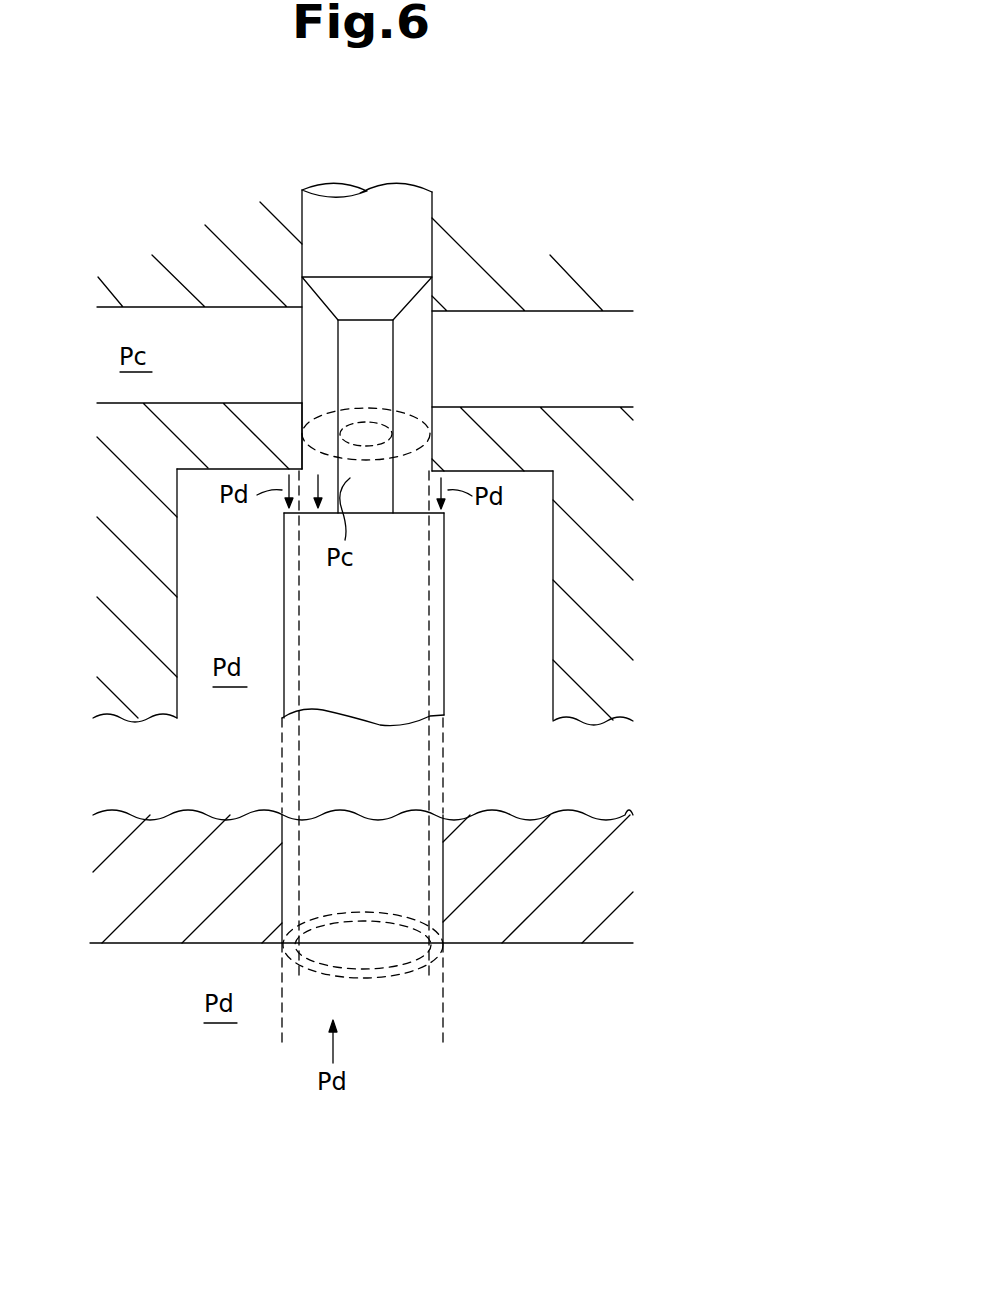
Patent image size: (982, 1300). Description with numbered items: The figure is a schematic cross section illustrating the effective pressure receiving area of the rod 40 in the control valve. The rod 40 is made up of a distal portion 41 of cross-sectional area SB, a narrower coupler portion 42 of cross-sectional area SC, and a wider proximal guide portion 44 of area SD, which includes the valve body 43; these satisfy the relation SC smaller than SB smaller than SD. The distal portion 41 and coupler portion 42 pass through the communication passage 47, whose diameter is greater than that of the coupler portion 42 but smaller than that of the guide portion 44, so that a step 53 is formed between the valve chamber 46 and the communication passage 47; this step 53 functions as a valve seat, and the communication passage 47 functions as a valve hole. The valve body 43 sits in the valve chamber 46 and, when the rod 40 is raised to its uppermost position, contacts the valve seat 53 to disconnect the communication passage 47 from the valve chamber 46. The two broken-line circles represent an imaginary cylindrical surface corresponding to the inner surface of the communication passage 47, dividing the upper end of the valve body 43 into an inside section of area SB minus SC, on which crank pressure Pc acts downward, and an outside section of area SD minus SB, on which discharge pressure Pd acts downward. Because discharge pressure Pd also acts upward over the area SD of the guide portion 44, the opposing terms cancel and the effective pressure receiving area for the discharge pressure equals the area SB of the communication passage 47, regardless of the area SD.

The rod 40 is at (378, 668).
The distal portion 41 is at (422, 206).
The coupler portion 42 is at (355, 347).
The valve body 43 is at (438, 523).
The guide portion 44 is at (433, 902).
The valve chamber 46 is at (553, 697).
The communication passage 47 is at (304, 412).
The valve seat 53 is at (298, 463).
The cross-sectional area of the distal portion SB is at (408, 413).
The cross-sectional area of the coupler portion SC is at (366, 422).
The area of the guide portion SD is at (380, 978).